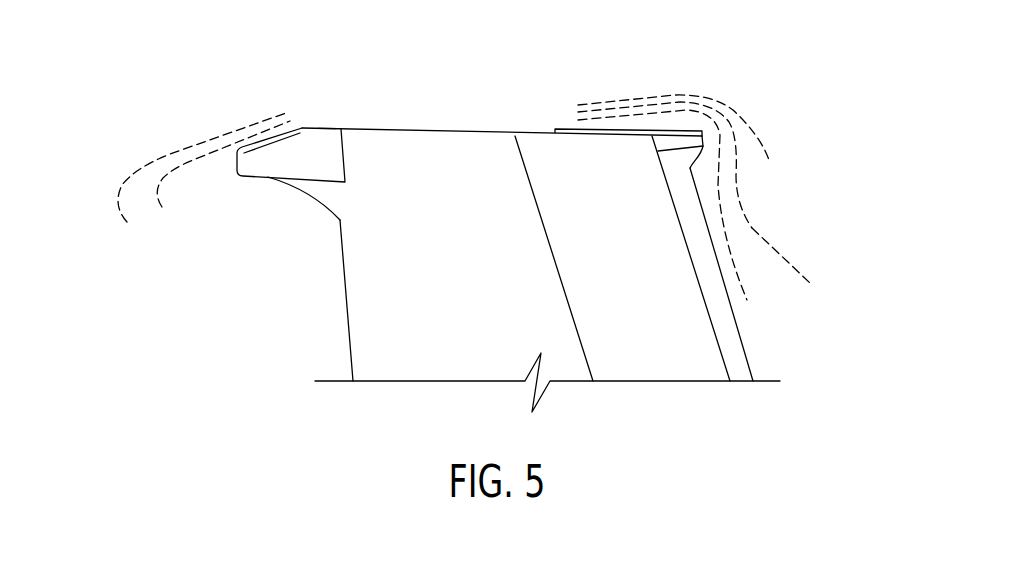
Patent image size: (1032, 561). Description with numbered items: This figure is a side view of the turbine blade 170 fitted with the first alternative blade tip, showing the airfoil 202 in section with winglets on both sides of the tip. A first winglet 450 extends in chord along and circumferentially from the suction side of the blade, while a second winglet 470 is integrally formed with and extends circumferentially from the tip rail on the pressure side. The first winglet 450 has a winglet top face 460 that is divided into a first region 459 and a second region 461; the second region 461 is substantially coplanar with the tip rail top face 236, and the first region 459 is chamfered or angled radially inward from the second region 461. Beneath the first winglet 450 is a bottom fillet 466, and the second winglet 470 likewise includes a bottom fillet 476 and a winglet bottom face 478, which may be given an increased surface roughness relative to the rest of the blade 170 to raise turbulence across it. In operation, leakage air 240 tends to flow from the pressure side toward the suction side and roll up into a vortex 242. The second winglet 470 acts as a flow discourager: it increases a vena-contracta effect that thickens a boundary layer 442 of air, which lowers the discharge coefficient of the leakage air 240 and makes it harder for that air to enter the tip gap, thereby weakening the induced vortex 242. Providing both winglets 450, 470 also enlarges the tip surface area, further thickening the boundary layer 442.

The turbine blade 170 is at (587, 62).
The airfoil 202 is at (330, 356).
The tip rail top face 236 is at (363, 129).
The leakage air 240 is at (791, 145).
The vortex 242 is at (141, 136).
The boundary layer 442 is at (687, 76).
The first winglet 450 is at (253, 141).
The first region 459 is at (274, 140).
The winglet top face 460 is at (311, 107).
The second region 461 is at (328, 128).
The bottom fillet 466 is at (313, 194).
The second winglet 470 is at (707, 106).
The bottom fillet 476 is at (694, 160).
The winglet bottom face 478 is at (713, 189).